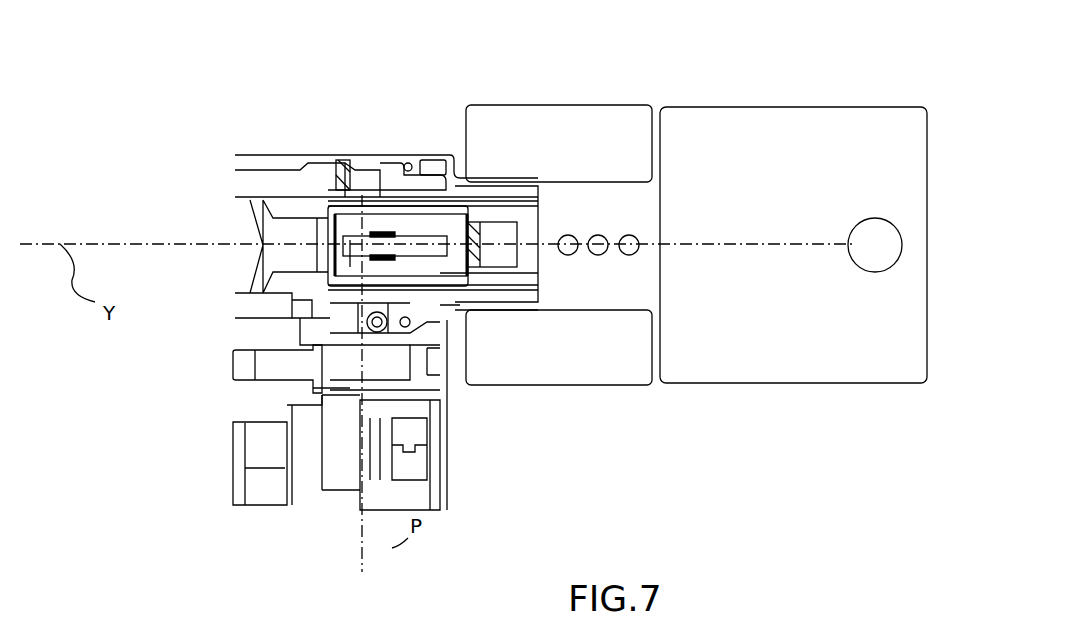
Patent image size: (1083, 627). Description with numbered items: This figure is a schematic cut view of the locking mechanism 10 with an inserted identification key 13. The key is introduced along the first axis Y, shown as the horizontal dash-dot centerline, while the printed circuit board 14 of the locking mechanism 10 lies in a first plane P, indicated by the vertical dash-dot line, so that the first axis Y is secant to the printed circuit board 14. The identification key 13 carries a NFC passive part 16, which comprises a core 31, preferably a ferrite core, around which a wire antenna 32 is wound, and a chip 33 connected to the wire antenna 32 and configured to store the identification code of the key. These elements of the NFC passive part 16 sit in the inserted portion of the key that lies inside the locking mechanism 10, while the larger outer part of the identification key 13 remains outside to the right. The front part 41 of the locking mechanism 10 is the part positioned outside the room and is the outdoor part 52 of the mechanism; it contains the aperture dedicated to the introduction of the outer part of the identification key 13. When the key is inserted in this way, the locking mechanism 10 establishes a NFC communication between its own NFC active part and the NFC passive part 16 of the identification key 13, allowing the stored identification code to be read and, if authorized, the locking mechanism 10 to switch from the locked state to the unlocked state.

The locking mechanism 10 is at (130, 97).
The identification key 13 is at (828, 135).
The printed circuit board 14 is at (350, 158).
The NFC passive part 16 is at (340, 198).
The core 31 is at (433, 243).
The wire antenna 32 is at (377, 233).
The chip 33 is at (336, 190).
The front part 41 is at (630, 374).
The outdoor part 52 is at (658, 90).